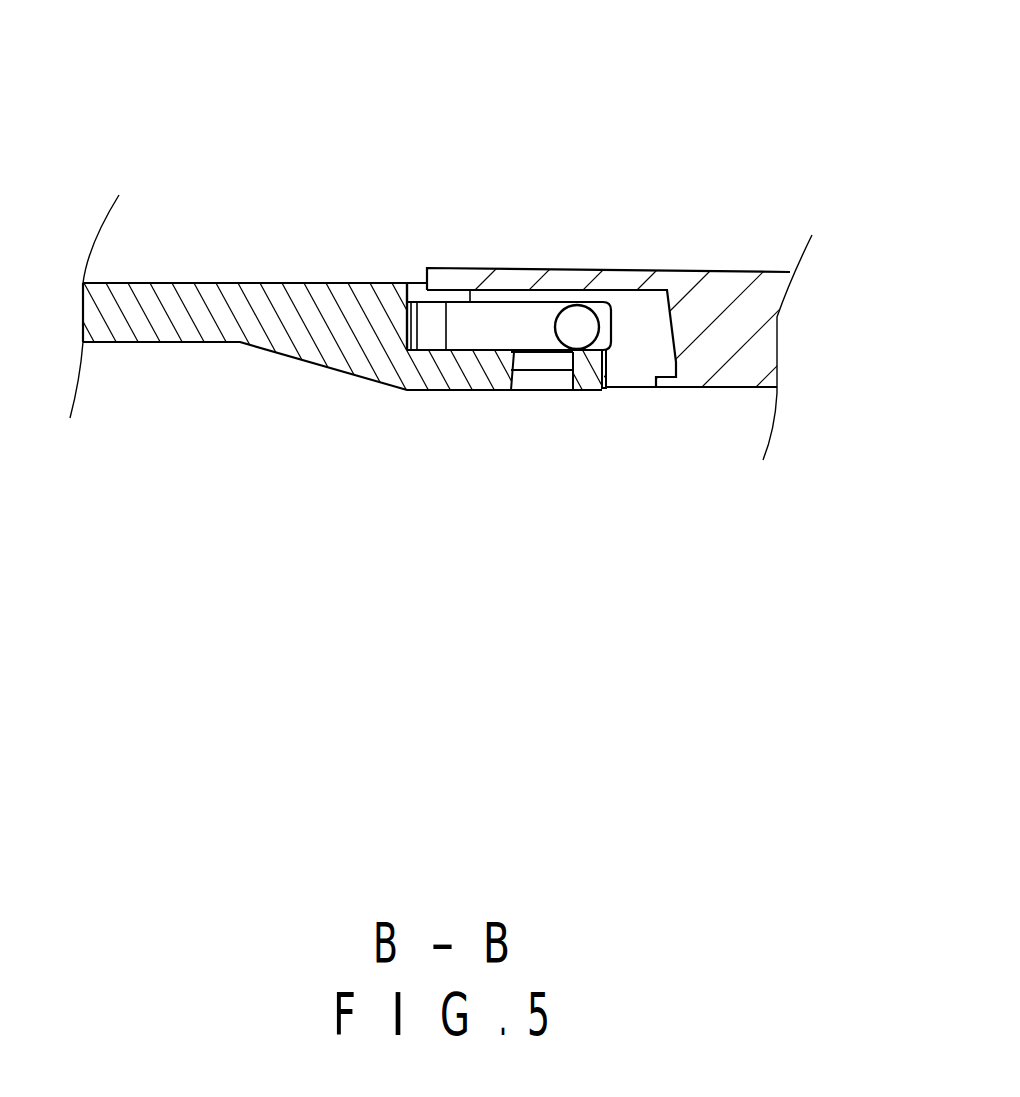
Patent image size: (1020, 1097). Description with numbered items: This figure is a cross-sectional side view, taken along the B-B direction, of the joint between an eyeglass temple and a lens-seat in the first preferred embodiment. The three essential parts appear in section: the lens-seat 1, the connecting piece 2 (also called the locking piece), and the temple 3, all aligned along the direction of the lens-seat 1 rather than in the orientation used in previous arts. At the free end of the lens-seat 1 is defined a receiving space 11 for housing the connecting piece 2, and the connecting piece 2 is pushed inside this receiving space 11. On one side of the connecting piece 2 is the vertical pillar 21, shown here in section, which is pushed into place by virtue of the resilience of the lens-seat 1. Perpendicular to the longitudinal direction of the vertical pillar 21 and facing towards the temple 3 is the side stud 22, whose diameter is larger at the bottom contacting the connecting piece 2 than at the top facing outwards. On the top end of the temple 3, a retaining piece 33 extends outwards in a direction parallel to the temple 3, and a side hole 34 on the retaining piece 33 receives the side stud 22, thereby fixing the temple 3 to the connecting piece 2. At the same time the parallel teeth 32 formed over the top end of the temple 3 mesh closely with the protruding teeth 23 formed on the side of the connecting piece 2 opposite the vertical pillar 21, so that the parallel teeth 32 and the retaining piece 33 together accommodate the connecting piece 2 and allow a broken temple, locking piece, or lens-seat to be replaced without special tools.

The lens-seat 1 is at (693, 269).
The receiving space 11 is at (625, 323).
The connecting piece 2 is at (510, 318).
The vertical pillar 21 is at (577, 318).
The side stud 22 is at (545, 367).
The temple 3 is at (233, 281).
The parallel teeth 32 is at (403, 296).
The protruding teeth 23 is at (403, 296).
The retaining piece 33 is at (427, 391).
The side hole 34 is at (497, 391).